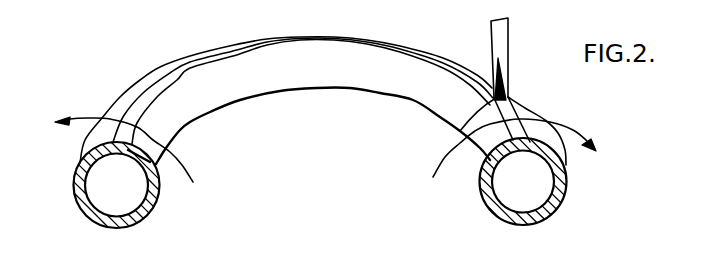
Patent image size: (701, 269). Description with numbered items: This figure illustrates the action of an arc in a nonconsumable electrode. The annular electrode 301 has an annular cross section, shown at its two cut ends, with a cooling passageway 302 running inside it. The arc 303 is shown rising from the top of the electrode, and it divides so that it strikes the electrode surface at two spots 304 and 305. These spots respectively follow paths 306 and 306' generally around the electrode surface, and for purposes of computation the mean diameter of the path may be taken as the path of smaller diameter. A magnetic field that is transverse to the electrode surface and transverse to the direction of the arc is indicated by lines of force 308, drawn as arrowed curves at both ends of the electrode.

The annular electrode 301 is at (97, 215).
The cooling passageway 302 is at (102, 170).
The arc 303 is at (498, 42).
The spot 304 is at (502, 103).
The spot 305 is at (490, 105).
The path 306 is at (546, 131).
The path 306' is at (323, 126).
The lines of force 308 is at (85, 118).